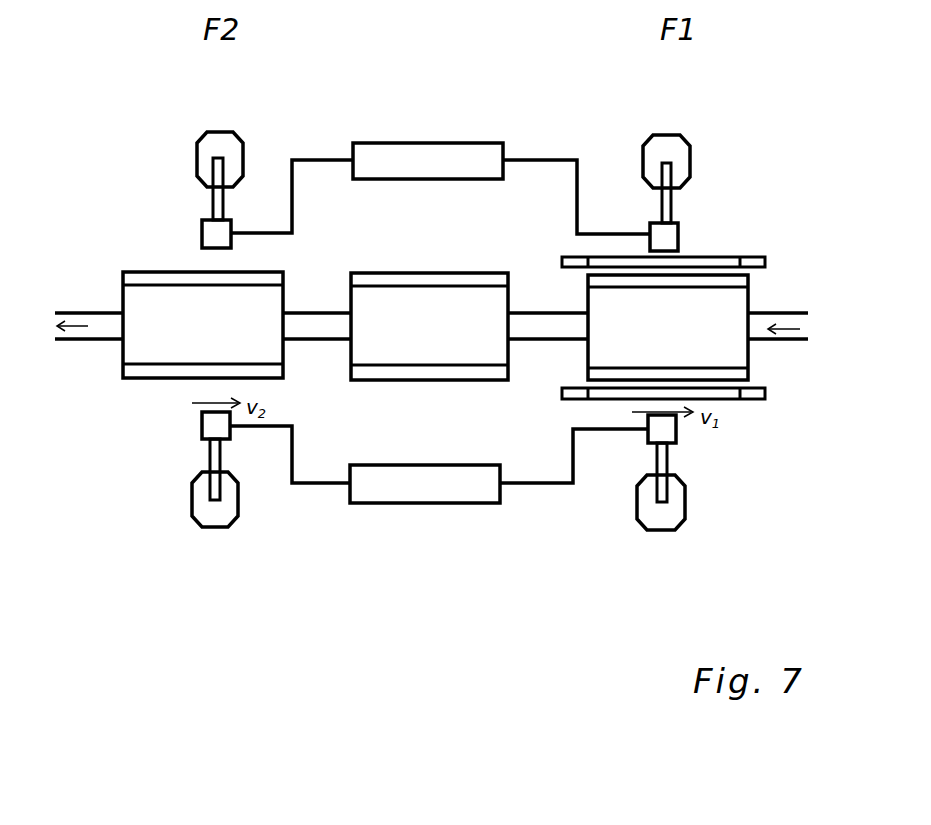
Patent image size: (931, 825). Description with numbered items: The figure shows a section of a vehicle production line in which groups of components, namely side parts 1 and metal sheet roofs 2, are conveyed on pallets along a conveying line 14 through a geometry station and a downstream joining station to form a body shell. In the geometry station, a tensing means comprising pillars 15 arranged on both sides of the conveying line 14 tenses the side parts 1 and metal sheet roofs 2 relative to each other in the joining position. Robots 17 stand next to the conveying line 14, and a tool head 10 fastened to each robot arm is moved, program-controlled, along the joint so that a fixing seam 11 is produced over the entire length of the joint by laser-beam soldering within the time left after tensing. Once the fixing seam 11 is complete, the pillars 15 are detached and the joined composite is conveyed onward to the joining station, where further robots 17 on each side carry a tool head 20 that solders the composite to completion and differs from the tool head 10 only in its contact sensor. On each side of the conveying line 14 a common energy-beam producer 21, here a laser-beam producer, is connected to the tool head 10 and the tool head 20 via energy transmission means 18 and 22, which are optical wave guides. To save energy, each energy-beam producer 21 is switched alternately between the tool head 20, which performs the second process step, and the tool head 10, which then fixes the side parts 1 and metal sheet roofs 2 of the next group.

The side parts 1 is at (369, 372).
The metal sheet roofs 2 is at (406, 352).
The tool head 10 is at (668, 237).
The fixing seam 11 is at (413, 287).
The conveying line 14 is at (105, 327).
The pillars 15 is at (758, 263).
The robots 17 is at (205, 145).
The energy transmission means 18 is at (542, 158).
The tool head 20 is at (213, 233).
The energy-beam producer 21 is at (403, 153).
The energy transmission means 22 is at (313, 155).